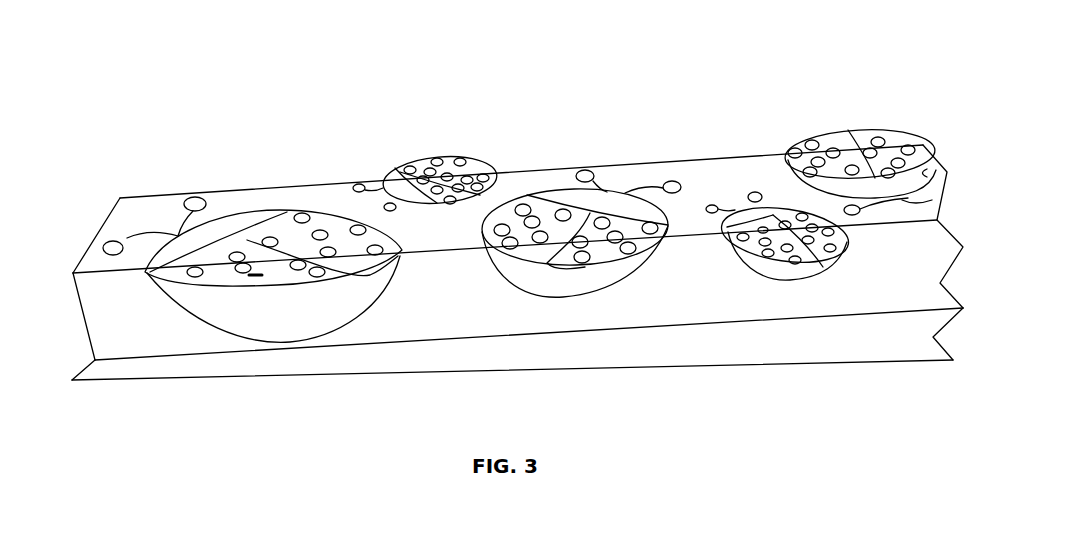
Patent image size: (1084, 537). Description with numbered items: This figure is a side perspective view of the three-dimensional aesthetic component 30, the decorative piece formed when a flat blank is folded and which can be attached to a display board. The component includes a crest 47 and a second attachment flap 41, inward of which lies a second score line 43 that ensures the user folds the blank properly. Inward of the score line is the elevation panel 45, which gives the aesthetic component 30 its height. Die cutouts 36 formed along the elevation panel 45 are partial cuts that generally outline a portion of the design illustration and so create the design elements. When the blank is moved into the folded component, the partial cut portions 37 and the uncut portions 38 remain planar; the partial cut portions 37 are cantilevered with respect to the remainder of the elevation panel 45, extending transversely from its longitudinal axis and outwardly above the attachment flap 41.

The 3D aesthetic component 30 is at (214, 69).
The die cutouts 36 is at (585, 292).
The partial cut portions 37 is at (428, 157).
The uncut portions 38 is at (748, 217).
The second attachment flap 41 is at (594, 352).
The second score line 43 is at (360, 346).
The elevation panel 45 is at (467, 300).
The crest 47 is at (141, 212).